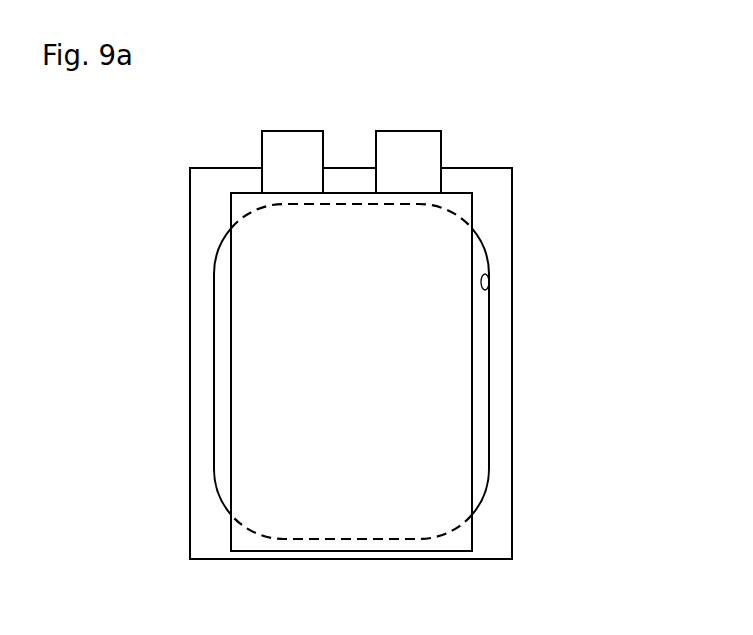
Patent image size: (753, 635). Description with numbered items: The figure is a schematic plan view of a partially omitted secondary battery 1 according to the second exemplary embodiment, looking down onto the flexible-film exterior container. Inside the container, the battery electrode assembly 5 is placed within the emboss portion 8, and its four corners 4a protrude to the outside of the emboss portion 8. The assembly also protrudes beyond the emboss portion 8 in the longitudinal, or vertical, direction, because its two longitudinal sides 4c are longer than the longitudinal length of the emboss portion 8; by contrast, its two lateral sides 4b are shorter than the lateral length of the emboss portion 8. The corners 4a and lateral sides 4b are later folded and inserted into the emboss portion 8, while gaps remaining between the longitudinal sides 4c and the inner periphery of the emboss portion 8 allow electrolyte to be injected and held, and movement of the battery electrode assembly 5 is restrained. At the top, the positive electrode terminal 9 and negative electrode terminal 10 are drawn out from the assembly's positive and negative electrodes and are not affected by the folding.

The secondary battery 1 is at (333, 95).
The corners 4a is at (241, 207).
The lateral sides 4b is at (341, 193).
The longitudinal sides 4c is at (233, 360).
The battery electrode assembly 5 is at (450, 362).
The emboss portion 8 is at (489, 292).
The positive electrode terminal 9 is at (273, 140).
The negative electrode terminal 10 is at (419, 140).